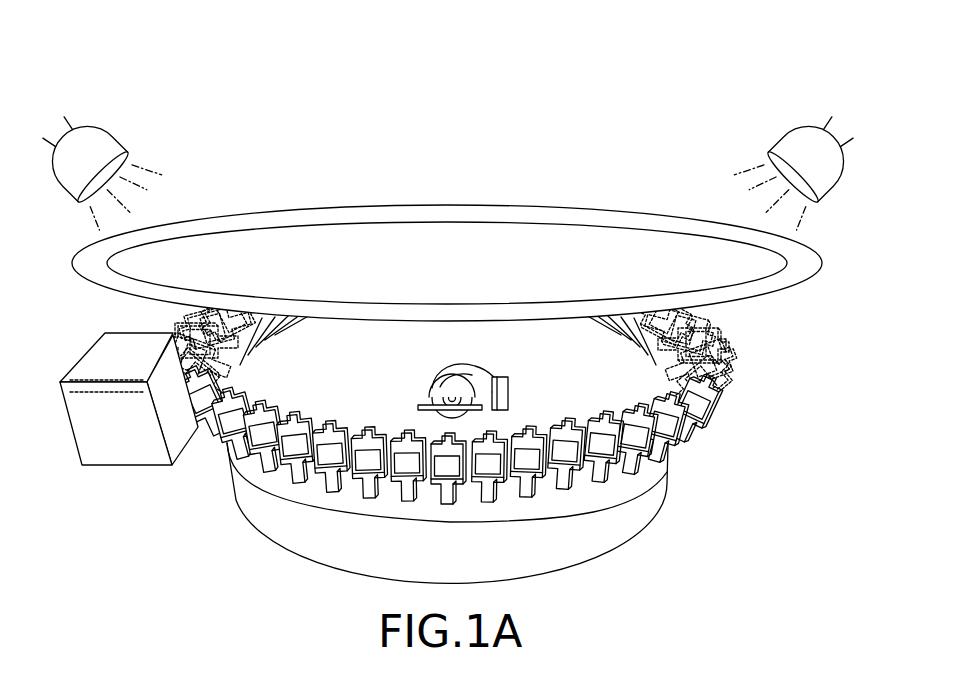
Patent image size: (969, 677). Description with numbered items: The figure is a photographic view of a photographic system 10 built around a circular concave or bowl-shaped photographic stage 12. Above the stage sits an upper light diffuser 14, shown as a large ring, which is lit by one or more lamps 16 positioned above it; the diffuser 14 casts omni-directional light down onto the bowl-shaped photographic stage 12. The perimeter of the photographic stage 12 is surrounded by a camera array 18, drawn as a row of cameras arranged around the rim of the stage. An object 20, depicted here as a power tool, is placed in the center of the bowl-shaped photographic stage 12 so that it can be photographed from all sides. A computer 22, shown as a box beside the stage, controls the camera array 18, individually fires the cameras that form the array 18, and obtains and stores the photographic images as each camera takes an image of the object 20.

The photographic system 10 is at (124, 98).
The photographic stage 12 is at (305, 428).
The upper light diffuser 14 is at (308, 247).
The lamps 16 is at (102, 150).
The camera array 18 is at (407, 460).
The object 20 is at (513, 400).
The computer 22 is at (133, 434).